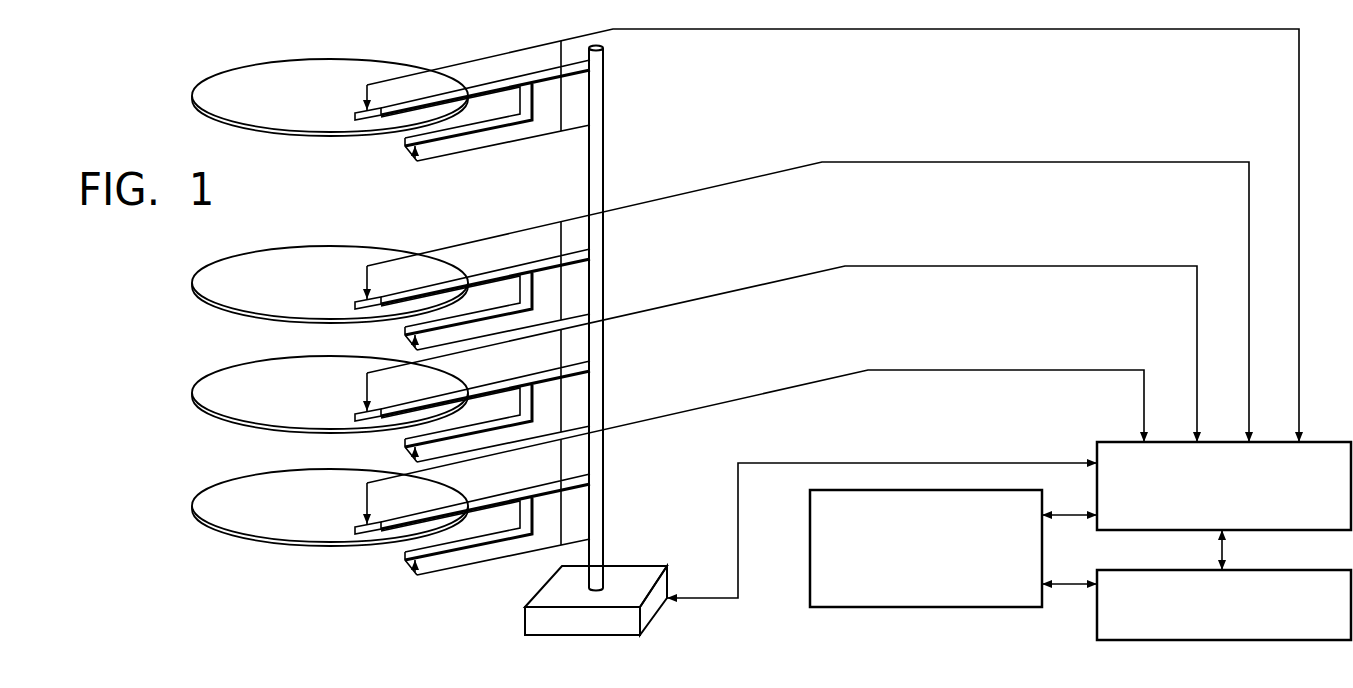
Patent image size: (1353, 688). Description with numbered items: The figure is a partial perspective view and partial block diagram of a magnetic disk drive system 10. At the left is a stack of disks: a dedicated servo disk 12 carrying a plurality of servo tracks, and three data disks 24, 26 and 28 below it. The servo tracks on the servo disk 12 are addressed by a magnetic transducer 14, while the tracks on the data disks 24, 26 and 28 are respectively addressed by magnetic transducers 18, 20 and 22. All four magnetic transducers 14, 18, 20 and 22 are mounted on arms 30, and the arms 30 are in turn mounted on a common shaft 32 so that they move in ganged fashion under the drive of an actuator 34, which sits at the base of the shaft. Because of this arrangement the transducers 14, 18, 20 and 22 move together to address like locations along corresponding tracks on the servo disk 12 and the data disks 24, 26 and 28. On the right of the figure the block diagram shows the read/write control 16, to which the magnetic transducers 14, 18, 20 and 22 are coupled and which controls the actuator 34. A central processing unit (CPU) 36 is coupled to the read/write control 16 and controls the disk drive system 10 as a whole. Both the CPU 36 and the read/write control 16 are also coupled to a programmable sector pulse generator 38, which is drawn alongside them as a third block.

The magnetic disk drive system 10 is at (425, 612).
The dedicated servo disk 12 is at (242, 70).
The magnetic transducer 14 is at (356, 114).
The read/write control 16 is at (1110, 442).
The magnetic transducer 18 is at (356, 303).
The magnetic transducer 20 is at (356, 415).
The magnetic transducer 22 is at (356, 528).
The data disk 24 is at (228, 312).
The data disk 26 is at (222, 420).
The data disk 28 is at (228, 534).
The arms 30 is at (550, 81).
The common shaft 32 is at (605, 149).
The actuator 34 is at (525, 623).
The central processing unit (CPU) 36 is at (1096, 624).
The programmable sector pulse generator 38 is at (900, 607).